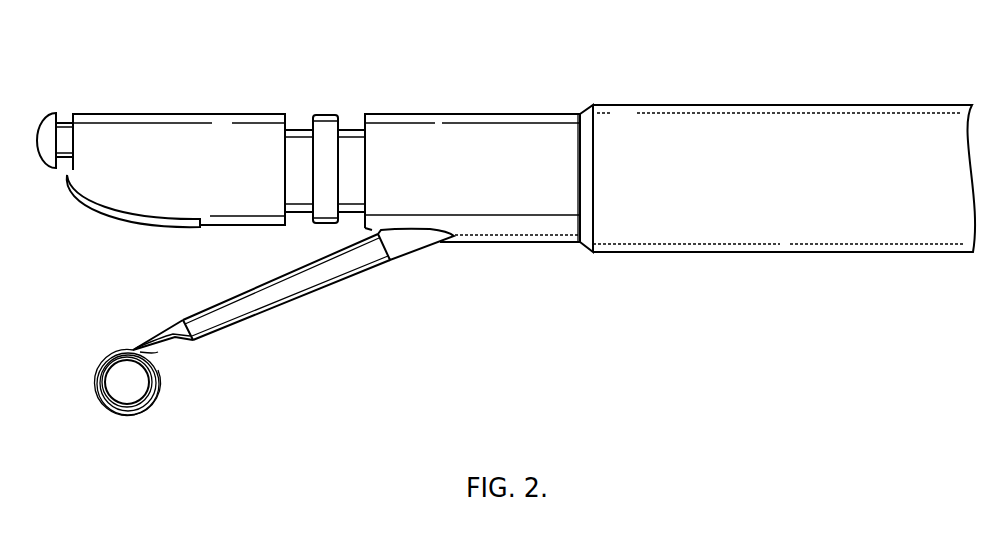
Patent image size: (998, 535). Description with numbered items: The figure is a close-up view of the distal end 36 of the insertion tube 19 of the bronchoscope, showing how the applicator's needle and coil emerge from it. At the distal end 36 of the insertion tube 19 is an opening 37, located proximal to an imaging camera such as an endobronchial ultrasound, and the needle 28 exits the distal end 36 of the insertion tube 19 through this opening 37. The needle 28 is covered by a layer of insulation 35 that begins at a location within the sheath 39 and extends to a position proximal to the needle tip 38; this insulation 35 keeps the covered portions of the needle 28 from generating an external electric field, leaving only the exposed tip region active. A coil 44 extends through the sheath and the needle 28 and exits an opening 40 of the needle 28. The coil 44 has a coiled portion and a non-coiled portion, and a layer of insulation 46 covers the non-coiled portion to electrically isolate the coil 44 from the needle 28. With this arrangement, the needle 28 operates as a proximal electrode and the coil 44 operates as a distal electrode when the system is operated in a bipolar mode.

The distal end 36 is at (189, 66).
The insertion tube 19 is at (615, 122).
The layer of insulation 35 is at (250, 291).
The opening 37 is at (365, 231).
The sheath 39 is at (408, 247).
The needle 28 is at (195, 312).
The needle tip 38 is at (133, 347).
The opening 40 is at (173, 342).
The layer of insulation 46 is at (157, 352).
The coil 44 is at (108, 410).